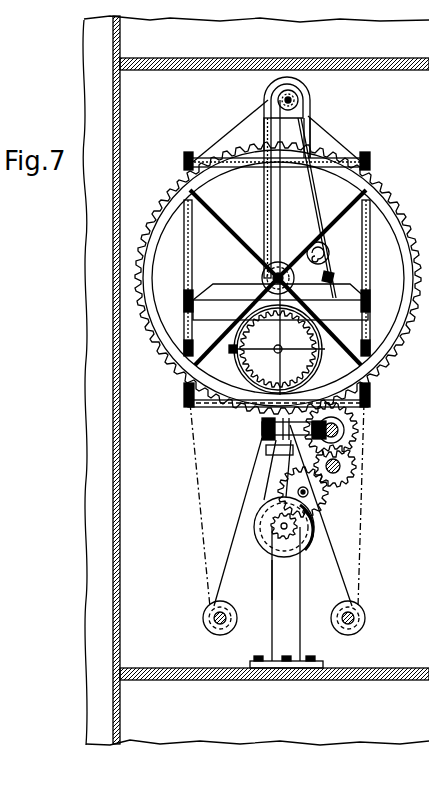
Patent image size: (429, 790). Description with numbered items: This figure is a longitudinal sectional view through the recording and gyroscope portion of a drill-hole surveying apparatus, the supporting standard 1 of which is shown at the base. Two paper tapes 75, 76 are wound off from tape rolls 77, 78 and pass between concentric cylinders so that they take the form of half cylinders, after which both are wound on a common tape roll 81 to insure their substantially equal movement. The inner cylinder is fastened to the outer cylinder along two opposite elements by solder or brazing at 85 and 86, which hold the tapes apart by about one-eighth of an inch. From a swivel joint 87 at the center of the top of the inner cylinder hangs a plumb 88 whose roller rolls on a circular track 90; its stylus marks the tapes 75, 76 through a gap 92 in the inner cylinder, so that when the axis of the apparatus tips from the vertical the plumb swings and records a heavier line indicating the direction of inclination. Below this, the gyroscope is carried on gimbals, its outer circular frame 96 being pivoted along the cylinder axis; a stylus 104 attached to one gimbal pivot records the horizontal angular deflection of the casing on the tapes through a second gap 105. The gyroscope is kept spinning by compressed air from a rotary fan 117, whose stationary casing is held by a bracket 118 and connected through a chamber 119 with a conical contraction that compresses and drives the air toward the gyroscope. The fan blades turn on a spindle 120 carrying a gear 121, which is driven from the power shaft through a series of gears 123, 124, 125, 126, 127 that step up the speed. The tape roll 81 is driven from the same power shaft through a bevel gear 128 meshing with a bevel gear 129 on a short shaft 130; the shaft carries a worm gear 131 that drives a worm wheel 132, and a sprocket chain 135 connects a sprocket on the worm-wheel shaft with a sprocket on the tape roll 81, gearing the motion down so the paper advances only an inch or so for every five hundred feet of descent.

The standard 1 is at (300, 583).
The tape 75 is at (247, 503).
The tape 76 is at (327, 505).
The tape roll 77 is at (203, 618).
The tape roll 78 is at (366, 620).
The common tape roll 81 is at (305, 100).
The solder or brazing joint 85 is at (265, 193).
The solder or brazing joint 86 is at (280, 214).
The swivel joint 87 is at (262, 149).
The plumb 88 is at (328, 254).
The circular track 90 is at (236, 300).
The gap 92 is at (283, 350).
The circular frame 96 is at (246, 370).
The stylus 104 is at (320, 351).
The gap 105 is at (362, 328).
The rotary fan 117 is at (310, 540).
The bracket 118 is at (300, 643).
The chamber 119 is at (268, 456).
The spindle 120 is at (290, 536).
The gear 121 is at (270, 530).
The gear 123 is at (357, 437).
The gear 124 is at (341, 463).
The gear 125 is at (356, 473).
The gear 126 is at (308, 497).
The gear 127 is at (329, 505).
The bevel gear 128 is at (347, 427).
The bevel gear 129 is at (300, 402).
The short shaft 130 is at (292, 455).
The worm gear 131 is at (262, 431).
The worm wheel 132 is at (276, 100).
The sprocket chain 135 is at (314, 132).